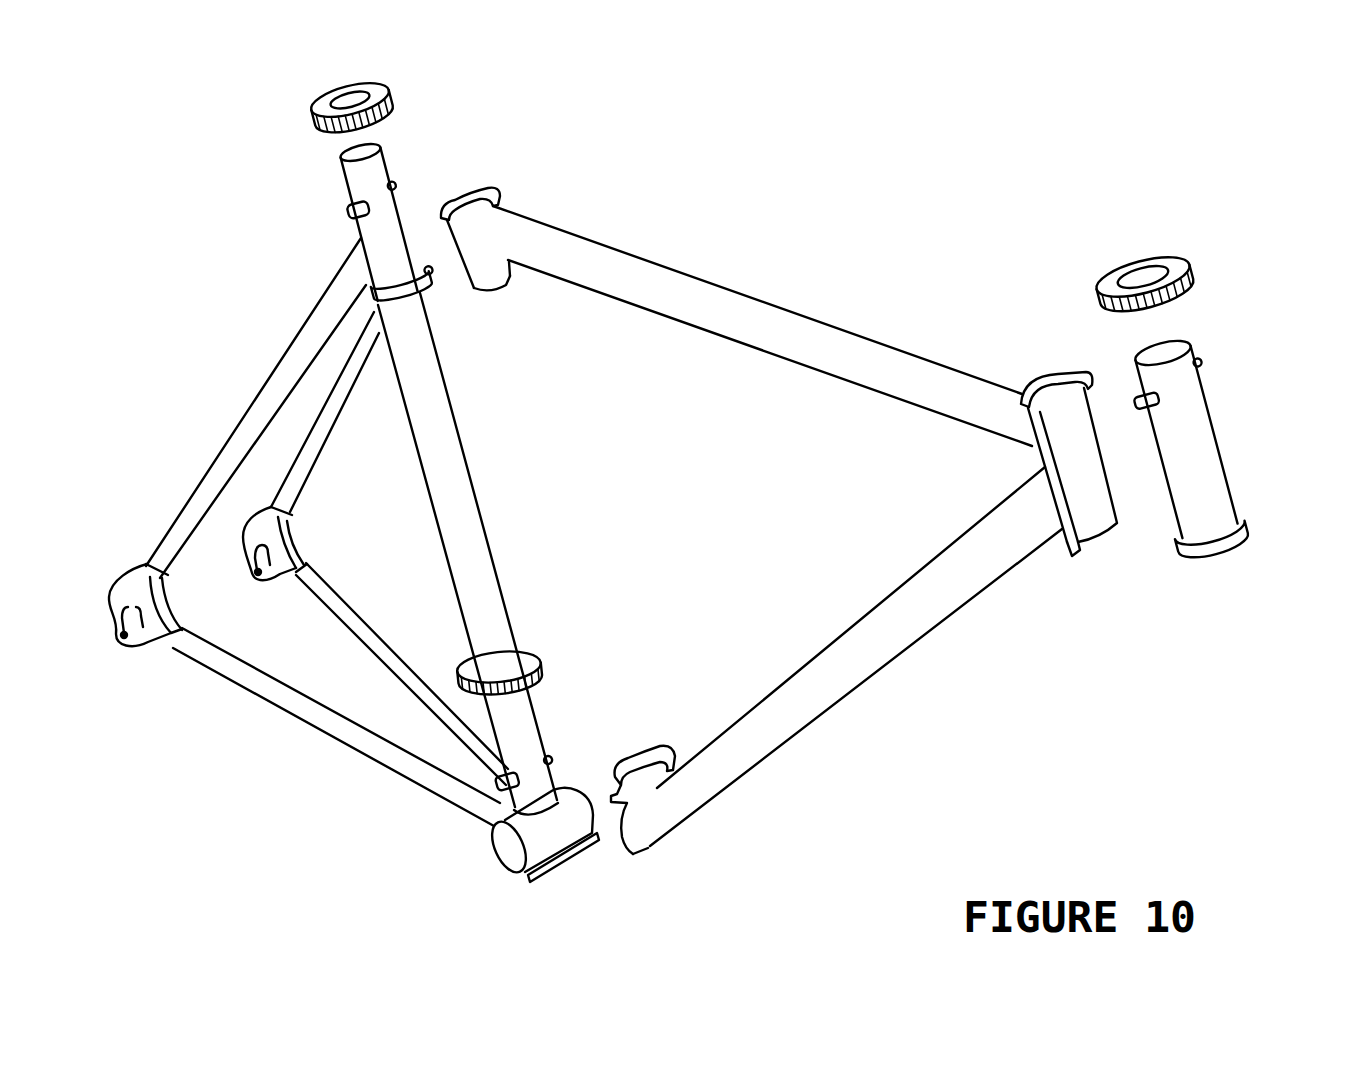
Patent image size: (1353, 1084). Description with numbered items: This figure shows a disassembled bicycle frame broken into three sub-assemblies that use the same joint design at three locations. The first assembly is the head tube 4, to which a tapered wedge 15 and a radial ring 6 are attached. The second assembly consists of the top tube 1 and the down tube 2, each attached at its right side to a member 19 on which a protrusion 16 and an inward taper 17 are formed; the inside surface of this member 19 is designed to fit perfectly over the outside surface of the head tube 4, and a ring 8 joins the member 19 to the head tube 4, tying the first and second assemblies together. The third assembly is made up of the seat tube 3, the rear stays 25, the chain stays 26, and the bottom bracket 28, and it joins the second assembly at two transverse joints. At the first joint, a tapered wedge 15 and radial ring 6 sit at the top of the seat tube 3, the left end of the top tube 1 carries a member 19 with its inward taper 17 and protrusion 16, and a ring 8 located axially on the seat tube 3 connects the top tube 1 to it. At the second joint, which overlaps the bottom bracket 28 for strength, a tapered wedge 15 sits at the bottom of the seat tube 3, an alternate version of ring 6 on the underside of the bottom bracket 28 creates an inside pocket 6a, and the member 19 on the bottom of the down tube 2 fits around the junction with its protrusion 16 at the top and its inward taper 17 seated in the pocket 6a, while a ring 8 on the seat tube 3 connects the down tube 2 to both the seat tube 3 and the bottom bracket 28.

The top tube 1 is at (795, 330).
The down tube 2 is at (885, 640).
The seat tube 3 is at (455, 487).
The head tube 4 is at (1200, 460).
The radial ring 6 is at (391, 299).
The inside pocket 6a is at (598, 834).
The ring 8 is at (385, 92).
The tapered wedge 15 is at (350, 208).
The protrusion 16 is at (496, 192).
The inward taper 17 is at (505, 285).
The member 19 is at (474, 256).
The rear stays 25 is at (332, 382).
The chain stays 26 is at (297, 707).
The bottom bracket 28 is at (505, 850).